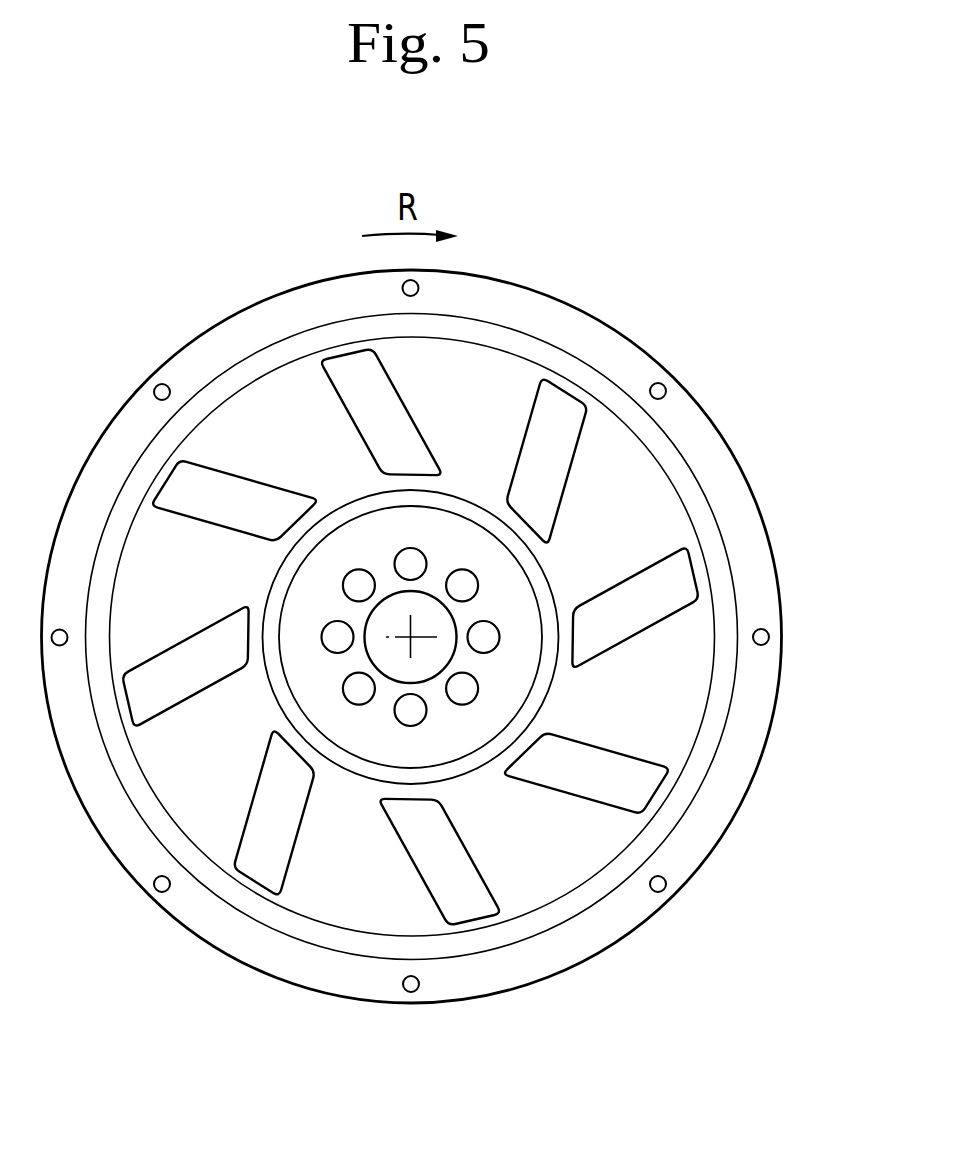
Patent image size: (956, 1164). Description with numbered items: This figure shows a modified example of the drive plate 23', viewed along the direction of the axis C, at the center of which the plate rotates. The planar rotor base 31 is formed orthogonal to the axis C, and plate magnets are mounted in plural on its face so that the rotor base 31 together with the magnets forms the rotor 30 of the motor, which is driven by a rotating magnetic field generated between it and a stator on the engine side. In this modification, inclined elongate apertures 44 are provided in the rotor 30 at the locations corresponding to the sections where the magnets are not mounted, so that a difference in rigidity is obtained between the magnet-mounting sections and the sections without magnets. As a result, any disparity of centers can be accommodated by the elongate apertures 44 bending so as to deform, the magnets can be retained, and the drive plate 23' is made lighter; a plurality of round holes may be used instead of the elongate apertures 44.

The drive plate 23' is at (450, 599).
The rotor base 31 is at (648, 492).
The rotor 30 is at (472, 637).
The elongate apertures 44 is at (563, 400).
The axis C is at (410, 637).